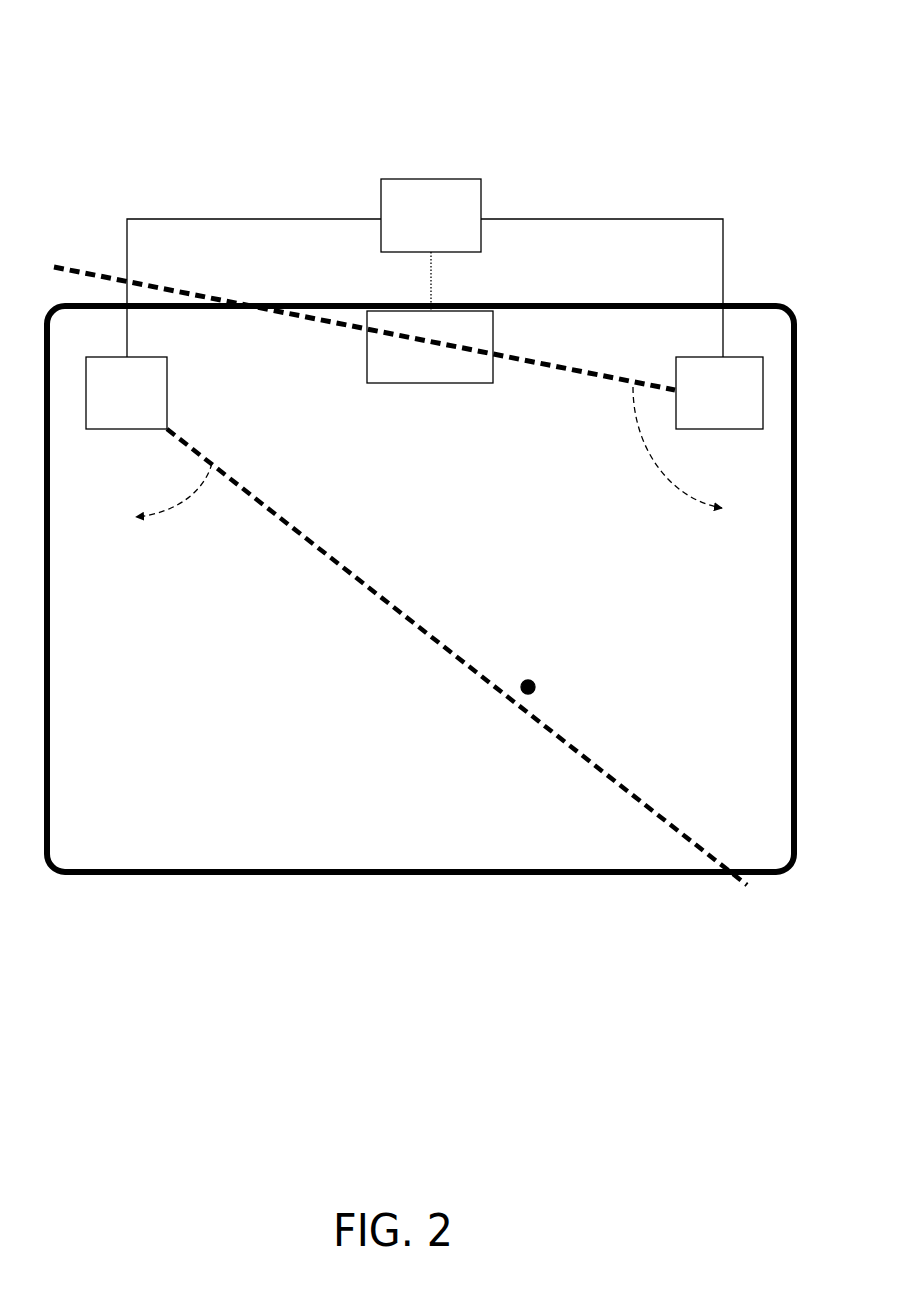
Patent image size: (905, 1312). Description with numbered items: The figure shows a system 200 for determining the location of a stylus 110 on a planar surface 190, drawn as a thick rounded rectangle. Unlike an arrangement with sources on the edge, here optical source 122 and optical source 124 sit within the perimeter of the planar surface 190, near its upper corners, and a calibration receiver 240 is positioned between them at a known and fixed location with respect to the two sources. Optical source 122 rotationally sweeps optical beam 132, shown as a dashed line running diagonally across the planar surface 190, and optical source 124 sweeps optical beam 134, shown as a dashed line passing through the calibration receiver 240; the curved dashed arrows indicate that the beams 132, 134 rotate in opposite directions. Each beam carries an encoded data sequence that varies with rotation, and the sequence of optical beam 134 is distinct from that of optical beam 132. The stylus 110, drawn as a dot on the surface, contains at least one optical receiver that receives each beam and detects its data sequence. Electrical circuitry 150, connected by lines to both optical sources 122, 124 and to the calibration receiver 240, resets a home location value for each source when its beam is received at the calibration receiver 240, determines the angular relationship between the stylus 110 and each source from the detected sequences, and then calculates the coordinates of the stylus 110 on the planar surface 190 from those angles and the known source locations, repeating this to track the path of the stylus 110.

The system 200 is at (739, 58).
The planar surface 190 is at (403, 880).
The electrical circuitry 150 is at (431, 215).
The calibration receiver 240 is at (430, 347).
The optical source 122 is at (149, 437).
The optical source 124 is at (698, 432).
The optical beam 132 is at (325, 558).
The optical beam 134 is at (578, 383).
The stylus 110 is at (533, 672).